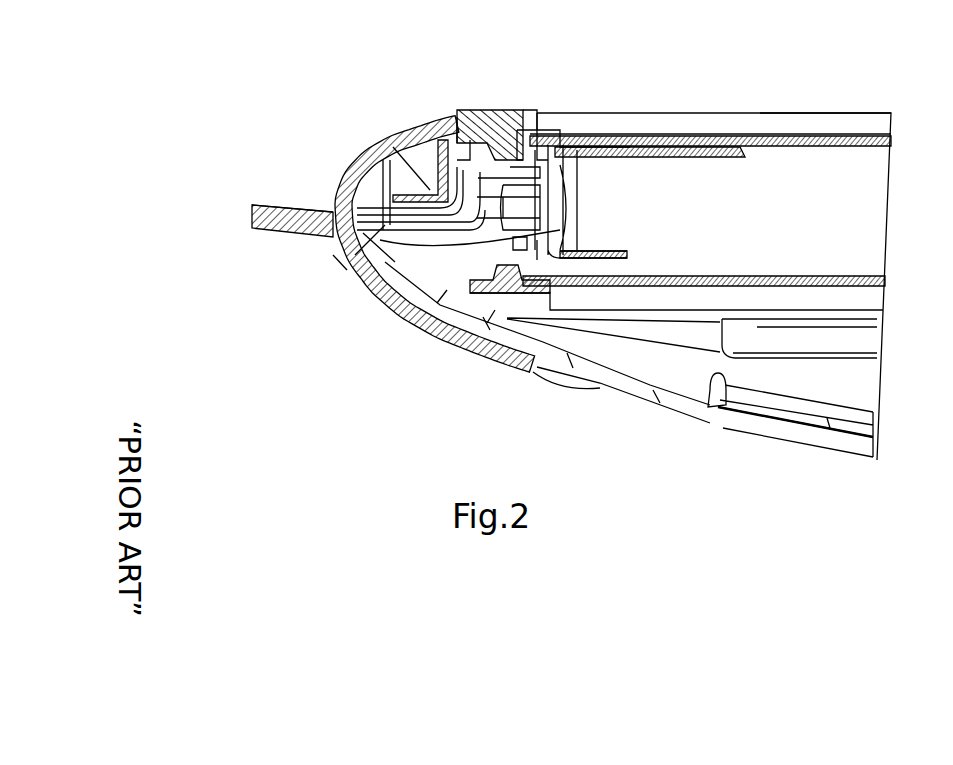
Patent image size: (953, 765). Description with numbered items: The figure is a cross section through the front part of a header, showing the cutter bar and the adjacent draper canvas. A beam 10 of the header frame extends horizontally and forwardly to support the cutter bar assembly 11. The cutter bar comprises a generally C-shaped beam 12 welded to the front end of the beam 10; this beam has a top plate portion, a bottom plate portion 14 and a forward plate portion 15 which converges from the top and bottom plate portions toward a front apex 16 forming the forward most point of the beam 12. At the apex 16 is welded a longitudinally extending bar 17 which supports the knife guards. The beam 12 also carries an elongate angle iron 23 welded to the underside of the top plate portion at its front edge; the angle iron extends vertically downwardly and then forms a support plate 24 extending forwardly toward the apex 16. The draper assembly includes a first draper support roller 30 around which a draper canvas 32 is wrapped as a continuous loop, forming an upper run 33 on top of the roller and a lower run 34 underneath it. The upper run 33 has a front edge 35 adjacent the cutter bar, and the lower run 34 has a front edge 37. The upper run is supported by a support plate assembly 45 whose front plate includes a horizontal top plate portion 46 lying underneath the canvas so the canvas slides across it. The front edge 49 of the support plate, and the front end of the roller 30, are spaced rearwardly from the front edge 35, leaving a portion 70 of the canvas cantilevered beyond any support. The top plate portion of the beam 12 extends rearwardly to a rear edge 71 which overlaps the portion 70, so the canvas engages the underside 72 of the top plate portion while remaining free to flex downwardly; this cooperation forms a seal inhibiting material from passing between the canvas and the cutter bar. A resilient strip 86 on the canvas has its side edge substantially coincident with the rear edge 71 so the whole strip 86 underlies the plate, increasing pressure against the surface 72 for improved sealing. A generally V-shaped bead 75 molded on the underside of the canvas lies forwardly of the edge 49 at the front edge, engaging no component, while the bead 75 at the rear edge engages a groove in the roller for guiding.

The beam 10 is at (712, 426).
The cutter bar assembly 11 is at (355, 302).
The C-shaped beam 12 is at (443, 343).
The bottom plate portion 14 is at (503, 363).
The forward plate portion 15 is at (333, 183).
The front apex 16 is at (333, 203).
The longitudinally extending bar 17 is at (267, 230).
The angle iron 23 is at (410, 182).
The support plate 24 is at (372, 238).
The first draper support roller 30 is at (729, 222).
The draper canvas 32 is at (822, 131).
The upper run 33 is at (777, 140).
The lower run 34 is at (765, 277).
The front edge of the upper run 35 is at (457, 117).
The front edge of the lower run 37 is at (437, 323).
The support plate assembly 45 is at (692, 135).
The horizontal top plate portion 46 is at (620, 137).
The front edge of the support plate 49 is at (560, 130).
The cantilevered portion 70 is at (520, 120).
The rear edge of the top plate portion 71 is at (498, 164).
The underside of the top plate portion 72 is at (487, 117).
The bead 75 is at (560, 165).
The strip 86 is at (530, 120).